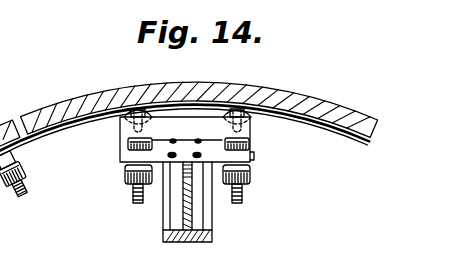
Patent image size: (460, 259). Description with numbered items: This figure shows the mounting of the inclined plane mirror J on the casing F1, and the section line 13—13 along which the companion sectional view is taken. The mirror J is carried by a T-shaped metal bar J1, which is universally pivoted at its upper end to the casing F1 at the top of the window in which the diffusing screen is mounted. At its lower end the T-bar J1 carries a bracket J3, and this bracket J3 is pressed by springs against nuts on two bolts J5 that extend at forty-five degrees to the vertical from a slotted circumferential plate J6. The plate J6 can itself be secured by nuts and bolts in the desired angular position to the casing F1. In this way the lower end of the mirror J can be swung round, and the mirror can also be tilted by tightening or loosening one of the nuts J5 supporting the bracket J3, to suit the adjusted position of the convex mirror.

The casing F1 is at (307, 108).
The slotted circumferential plate J6 is at (58, 131).
The bracket J3 is at (215, 152).
The bolts J5 is at (292, 197).
The T-shaped metal bar J1 is at (192, 210).
The inclined plane mirror J is at (210, 237).
The section line 13— 13 is at (114, 20).